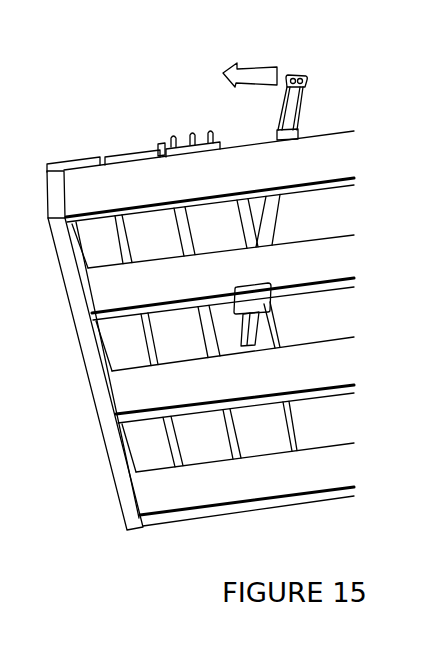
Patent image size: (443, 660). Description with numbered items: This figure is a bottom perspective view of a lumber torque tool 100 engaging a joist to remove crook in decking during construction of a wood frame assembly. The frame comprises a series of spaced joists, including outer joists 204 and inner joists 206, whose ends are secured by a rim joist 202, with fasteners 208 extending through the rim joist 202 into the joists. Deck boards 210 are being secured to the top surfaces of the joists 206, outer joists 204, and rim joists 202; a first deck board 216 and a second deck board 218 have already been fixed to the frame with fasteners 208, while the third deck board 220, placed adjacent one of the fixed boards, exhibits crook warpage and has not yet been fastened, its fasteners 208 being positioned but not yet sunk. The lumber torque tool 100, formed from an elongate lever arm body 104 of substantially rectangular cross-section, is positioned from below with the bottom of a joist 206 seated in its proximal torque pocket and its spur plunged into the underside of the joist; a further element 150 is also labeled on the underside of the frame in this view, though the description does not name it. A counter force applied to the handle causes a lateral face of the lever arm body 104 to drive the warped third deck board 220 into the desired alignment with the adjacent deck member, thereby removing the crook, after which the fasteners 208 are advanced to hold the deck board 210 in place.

The lumber torque tool 100 is at (336, 71).
The lever arm body 104 is at (287, 217).
The clip 150 is at (271, 306).
The rim joist 202 is at (100, 441).
The outer joist 204 is at (338, 146).
The inner joist 206 is at (341, 258).
The fasteners 208 is at (167, 133).
The deck boards 210 is at (352, 426).
The first deck board 216 is at (153, 455).
The second deck board 218 is at (211, 450).
The third deck board 220 is at (296, 429).